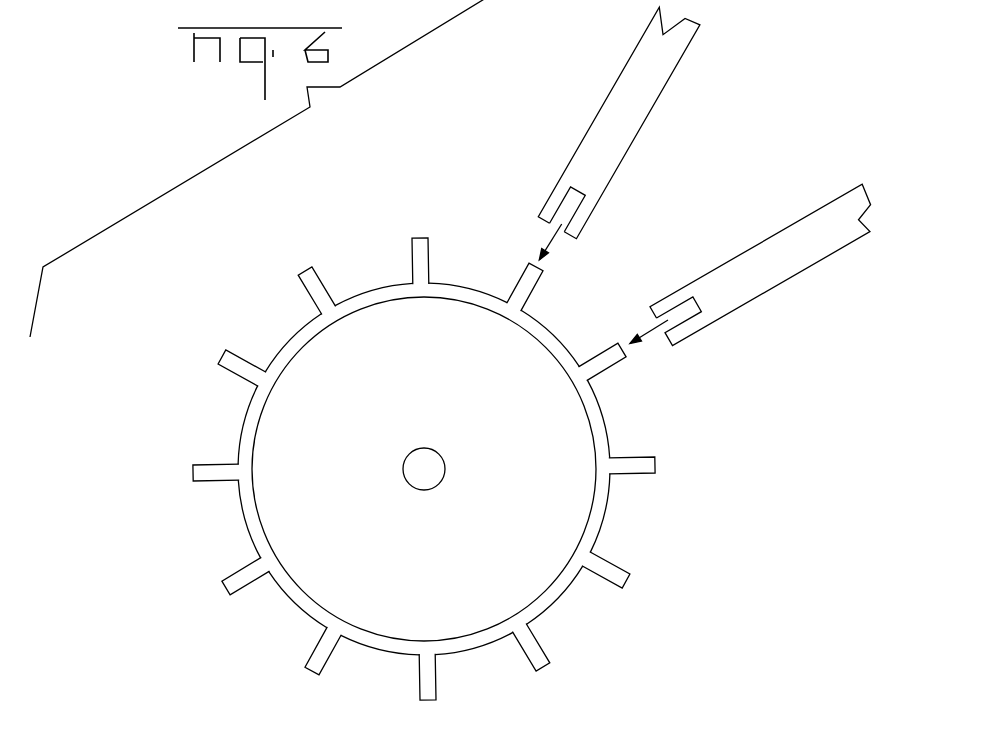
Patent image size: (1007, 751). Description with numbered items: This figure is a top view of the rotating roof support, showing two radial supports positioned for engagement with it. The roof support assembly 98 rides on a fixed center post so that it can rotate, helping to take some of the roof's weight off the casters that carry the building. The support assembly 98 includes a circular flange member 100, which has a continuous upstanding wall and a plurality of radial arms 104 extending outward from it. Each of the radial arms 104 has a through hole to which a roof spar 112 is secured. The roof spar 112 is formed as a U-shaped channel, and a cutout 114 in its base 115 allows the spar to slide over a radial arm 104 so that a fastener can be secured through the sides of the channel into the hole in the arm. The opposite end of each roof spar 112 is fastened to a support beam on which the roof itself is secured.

The roof support assembly 98 is at (635, 520).
The circular flange member 100 is at (605, 428).
The radial arms 104 is at (520, 277).
The roof spar 112 is at (619, 68).
The cutout 114 is at (578, 192).
The base 115 is at (602, 163).